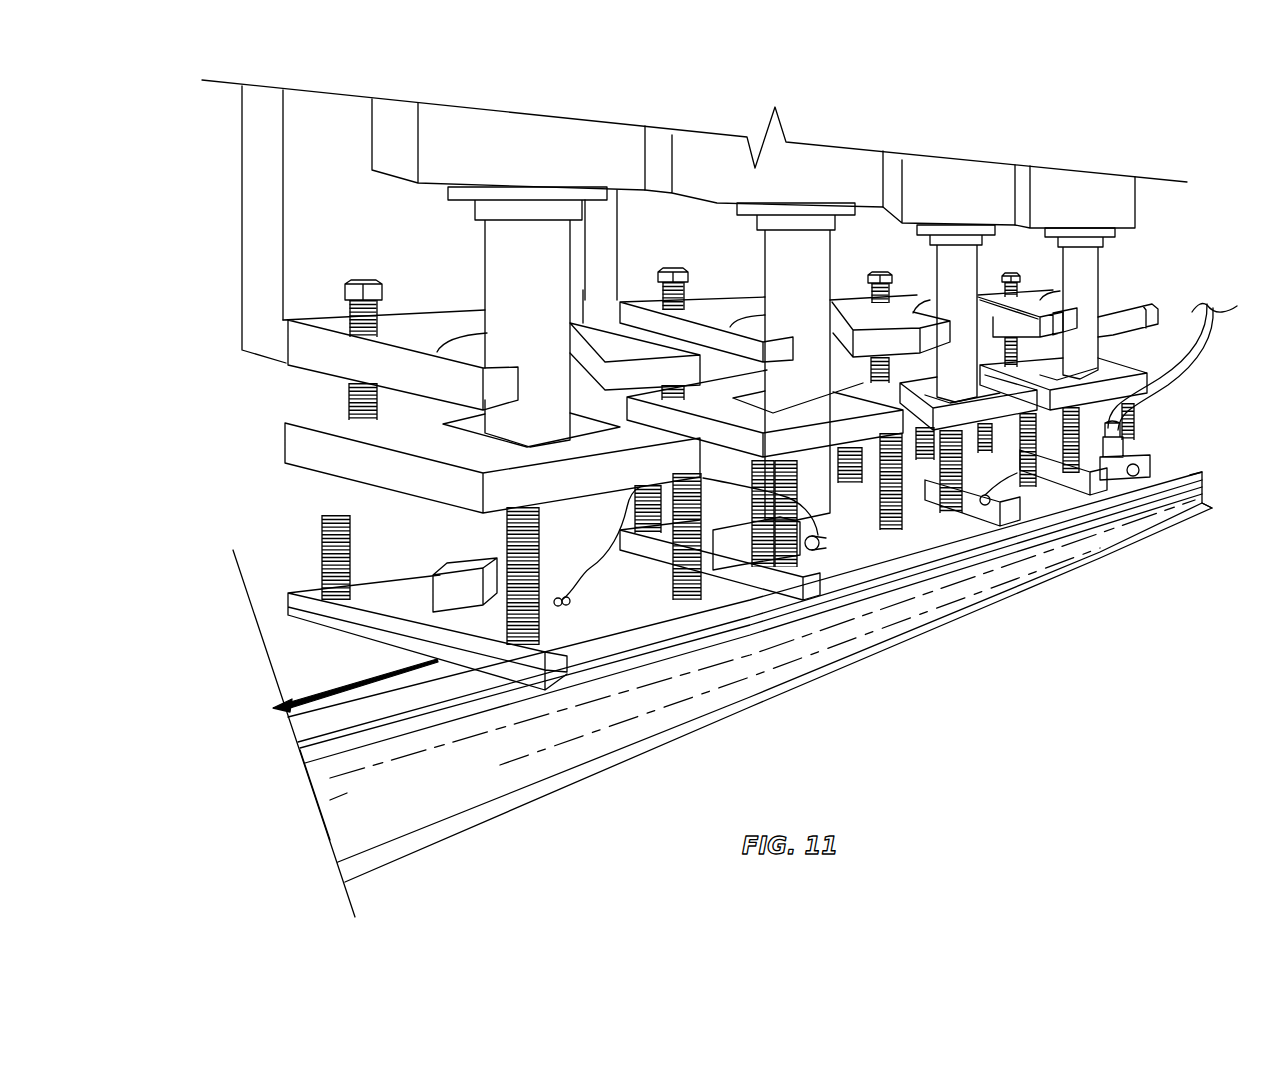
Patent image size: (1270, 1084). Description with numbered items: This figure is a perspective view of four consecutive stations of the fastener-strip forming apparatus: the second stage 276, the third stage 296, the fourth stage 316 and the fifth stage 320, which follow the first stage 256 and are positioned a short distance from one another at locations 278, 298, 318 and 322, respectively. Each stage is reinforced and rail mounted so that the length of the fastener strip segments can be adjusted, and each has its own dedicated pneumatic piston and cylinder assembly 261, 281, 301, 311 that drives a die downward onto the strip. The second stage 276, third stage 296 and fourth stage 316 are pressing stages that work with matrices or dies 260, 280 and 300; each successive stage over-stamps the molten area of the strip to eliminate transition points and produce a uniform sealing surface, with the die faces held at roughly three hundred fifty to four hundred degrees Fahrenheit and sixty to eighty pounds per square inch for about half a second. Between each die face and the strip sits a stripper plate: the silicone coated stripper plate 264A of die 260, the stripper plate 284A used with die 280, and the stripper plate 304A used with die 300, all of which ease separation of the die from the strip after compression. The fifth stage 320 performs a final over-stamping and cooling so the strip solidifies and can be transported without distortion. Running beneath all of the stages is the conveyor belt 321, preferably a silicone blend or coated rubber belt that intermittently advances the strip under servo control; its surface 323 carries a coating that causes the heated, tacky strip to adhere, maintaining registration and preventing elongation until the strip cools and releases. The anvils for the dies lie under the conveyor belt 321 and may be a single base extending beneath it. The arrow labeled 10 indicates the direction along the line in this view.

The workpiece sheet 10 is at (322, 681).
The first stage 256 is at (318, 462).
The die 260 is at (465, 612).
The pneumatic piston and cylinder assembly 261 is at (490, 276).
The stripper plate 264A is at (398, 600).
The second stage 276 is at (310, 320).
The location 278 is at (685, 712).
The die 280 is at (855, 567).
The pneumatic piston and cylinder assembly 281 is at (723, 143).
The stripper plate 284A is at (853, 565).
The third stage 296 is at (752, 300).
The location 298 is at (808, 650).
The die 300 is at (1003, 520).
The pneumatic piston and cylinder assembly 301 is at (920, 160).
The stripper plate 304A is at (1043, 555).
The pneumatic piston and cylinder assembly 311 is at (1050, 178).
The fourth stage 316 is at (920, 300).
The location 318 is at (1080, 552).
The fifth stage 320 is at (1065, 292).
The conveyor belt 321 is at (363, 737).
The location 322 is at (1150, 522).
The surface 323 is at (312, 757).